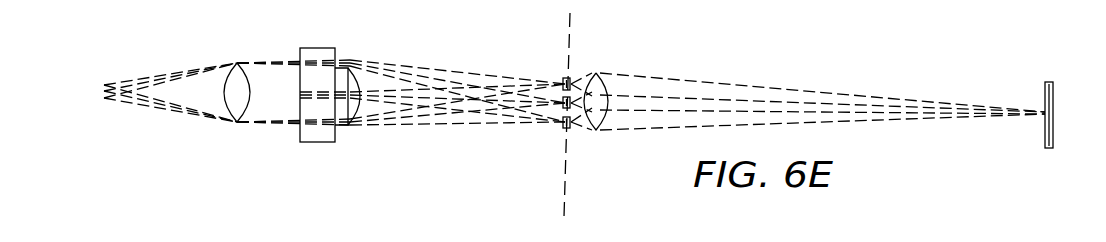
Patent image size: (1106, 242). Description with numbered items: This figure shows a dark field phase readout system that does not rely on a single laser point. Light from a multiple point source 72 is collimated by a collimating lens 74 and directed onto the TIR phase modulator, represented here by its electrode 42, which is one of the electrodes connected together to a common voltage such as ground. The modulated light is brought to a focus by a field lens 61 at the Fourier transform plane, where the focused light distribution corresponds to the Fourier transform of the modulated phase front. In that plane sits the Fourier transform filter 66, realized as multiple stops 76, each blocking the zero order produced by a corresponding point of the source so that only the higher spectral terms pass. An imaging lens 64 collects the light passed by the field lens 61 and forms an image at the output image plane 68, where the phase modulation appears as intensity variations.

The multiple point source 72 is at (108, 102).
The collimating lens 74 is at (224, 92).
The electrode 42 is at (317, 138).
The field lens 61 is at (359, 110).
The multiple stops 76 is at (553, 131).
The Fourier transform filter 66 is at (572, 52).
The imaging lens 64 is at (607, 98).
The output image plane 68 is at (1044, 92).